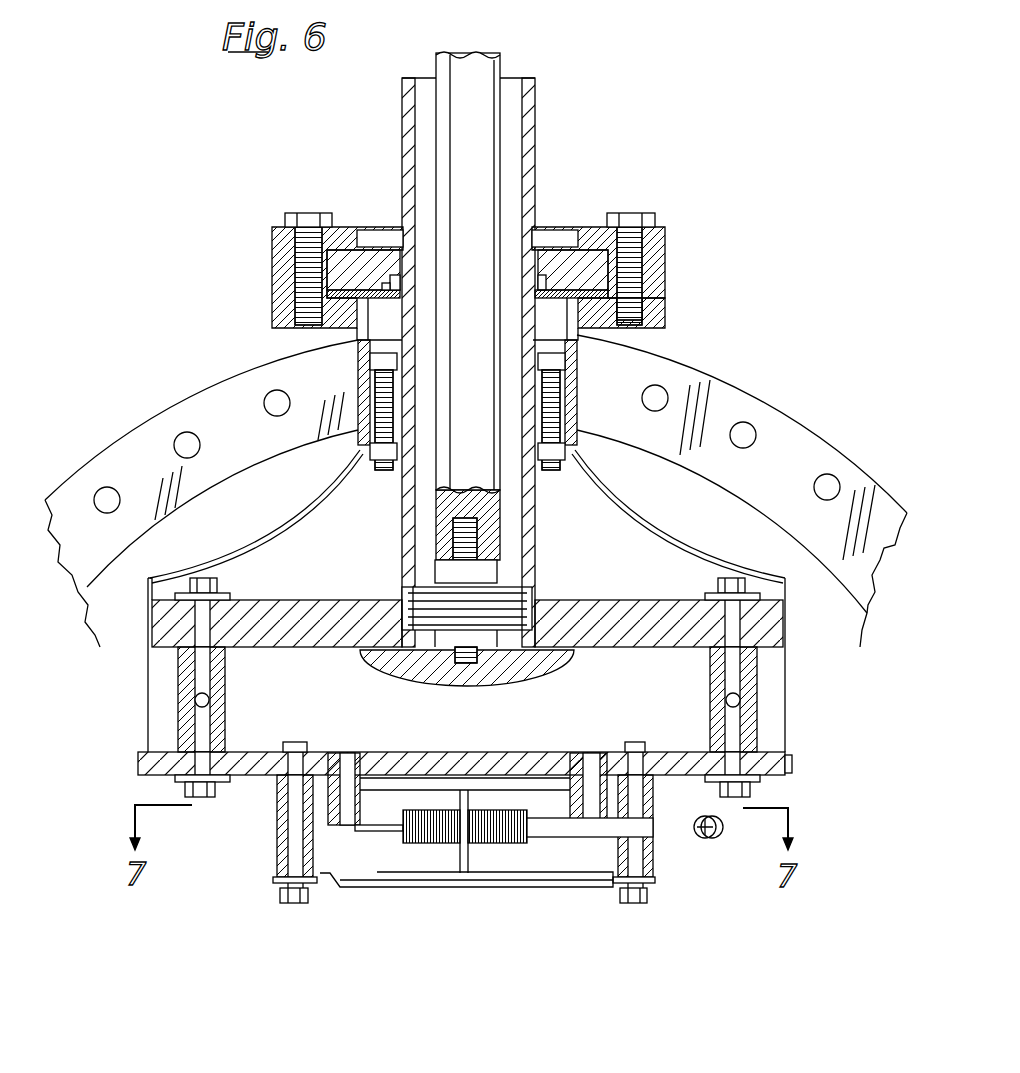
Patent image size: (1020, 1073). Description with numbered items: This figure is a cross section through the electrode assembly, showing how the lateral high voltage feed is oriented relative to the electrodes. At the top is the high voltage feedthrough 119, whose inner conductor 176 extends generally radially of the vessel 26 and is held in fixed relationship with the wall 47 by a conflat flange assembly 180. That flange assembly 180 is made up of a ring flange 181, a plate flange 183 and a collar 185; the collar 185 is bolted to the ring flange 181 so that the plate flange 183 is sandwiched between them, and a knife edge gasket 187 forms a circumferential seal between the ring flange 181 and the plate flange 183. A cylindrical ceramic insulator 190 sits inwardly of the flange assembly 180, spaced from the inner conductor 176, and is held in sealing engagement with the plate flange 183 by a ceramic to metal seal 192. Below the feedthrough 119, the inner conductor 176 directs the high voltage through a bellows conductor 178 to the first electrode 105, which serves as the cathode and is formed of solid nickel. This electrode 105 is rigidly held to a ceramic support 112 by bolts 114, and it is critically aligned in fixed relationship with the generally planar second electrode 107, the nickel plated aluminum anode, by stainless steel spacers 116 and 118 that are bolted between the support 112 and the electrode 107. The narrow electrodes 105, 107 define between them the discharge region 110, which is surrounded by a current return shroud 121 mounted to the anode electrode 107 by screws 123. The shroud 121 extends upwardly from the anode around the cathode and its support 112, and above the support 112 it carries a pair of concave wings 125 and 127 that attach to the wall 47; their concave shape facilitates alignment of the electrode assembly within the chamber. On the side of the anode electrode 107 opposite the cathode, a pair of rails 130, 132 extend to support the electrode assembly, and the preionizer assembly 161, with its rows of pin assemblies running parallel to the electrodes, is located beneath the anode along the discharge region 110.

The feedthrough 119 is at (662, 130).
The inner conductor 176 is at (485, 140).
The ceramic to metal seal 192 is at (400, 285).
The cylindrical ceramic insulator 190 is at (530, 198).
The conflat flange assembly 180 is at (262, 208).
The plate flange 183 is at (560, 275).
The collar 185 is at (660, 265).
The ring flange 181 is at (660, 313).
The vessel 26 is at (772, 352).
The knife edge gasket 187 is at (625, 330).
The wall 47 is at (237, 480).
The concave wing 127 is at (678, 538).
The concave wing 125 is at (288, 528).
The bellows conductor 178 is at (503, 585).
The ceramic support 112 is at (628, 618).
The stainless steel spacer 116 is at (187, 688).
The discharge region 110 is at (368, 710).
The first electrode 105 is at (570, 668).
The bolt 114 is at (468, 663).
The stainless steel spacer 118 is at (753, 690).
The current return shroud 121 is at (787, 731).
The second electrode 107 is at (548, 755).
The screw 123 is at (795, 763).
The rail 130 is at (283, 835).
The rail 132 is at (653, 866).
The preionizer assembly 161 is at (318, 903).